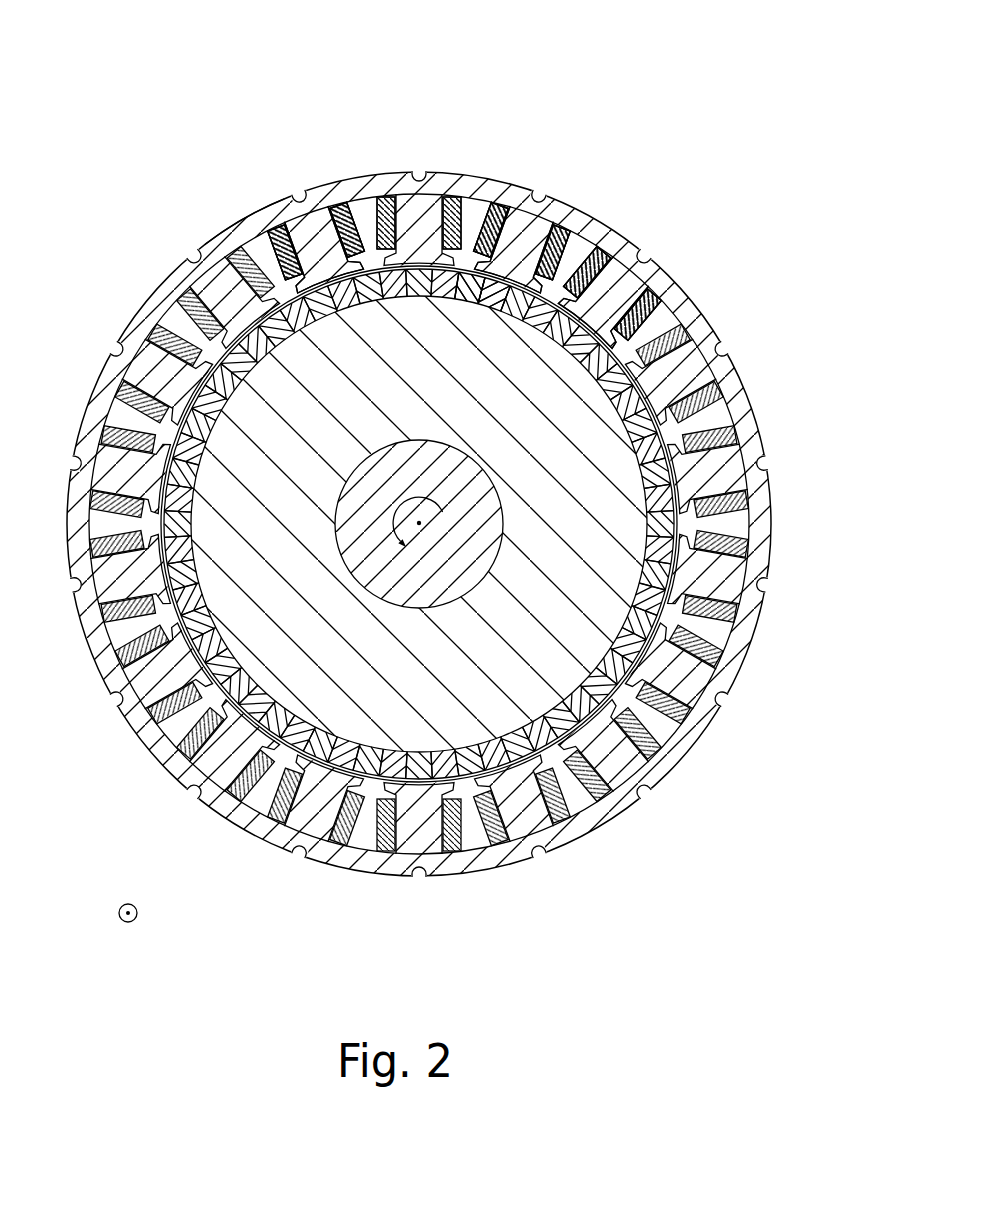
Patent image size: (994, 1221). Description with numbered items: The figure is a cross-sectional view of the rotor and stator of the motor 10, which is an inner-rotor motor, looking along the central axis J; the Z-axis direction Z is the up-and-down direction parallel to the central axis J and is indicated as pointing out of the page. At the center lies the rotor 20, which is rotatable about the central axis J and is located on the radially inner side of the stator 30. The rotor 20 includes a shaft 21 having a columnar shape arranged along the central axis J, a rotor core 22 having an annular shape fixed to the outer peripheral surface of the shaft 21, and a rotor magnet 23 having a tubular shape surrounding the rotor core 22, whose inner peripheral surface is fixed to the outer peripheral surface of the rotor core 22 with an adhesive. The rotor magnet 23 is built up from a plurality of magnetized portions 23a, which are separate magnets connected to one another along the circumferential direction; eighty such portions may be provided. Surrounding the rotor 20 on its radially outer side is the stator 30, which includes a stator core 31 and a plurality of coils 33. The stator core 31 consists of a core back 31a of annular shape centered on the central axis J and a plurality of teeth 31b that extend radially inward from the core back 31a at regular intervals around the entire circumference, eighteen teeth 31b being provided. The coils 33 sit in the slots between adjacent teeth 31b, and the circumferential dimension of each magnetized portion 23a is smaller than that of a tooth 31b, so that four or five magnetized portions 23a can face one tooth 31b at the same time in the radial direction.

The motor 10 is at (675, 114).
The rotor 20 is at (623, 699).
The shaft 21 is at (407, 585).
The rotor core 22 is at (545, 390).
The rotor magnet 23 is at (647, 380).
The magnetized portion 23a is at (486, 265).
The stator 30 is at (713, 265).
The stator core 31 is at (382, 162).
The core back 31a is at (253, 223).
The tooth 31b is at (315, 235).
The coil 33 is at (419, 200).
The central axis J is at (440, 531).
The Z-axis direction Z is at (129, 931).